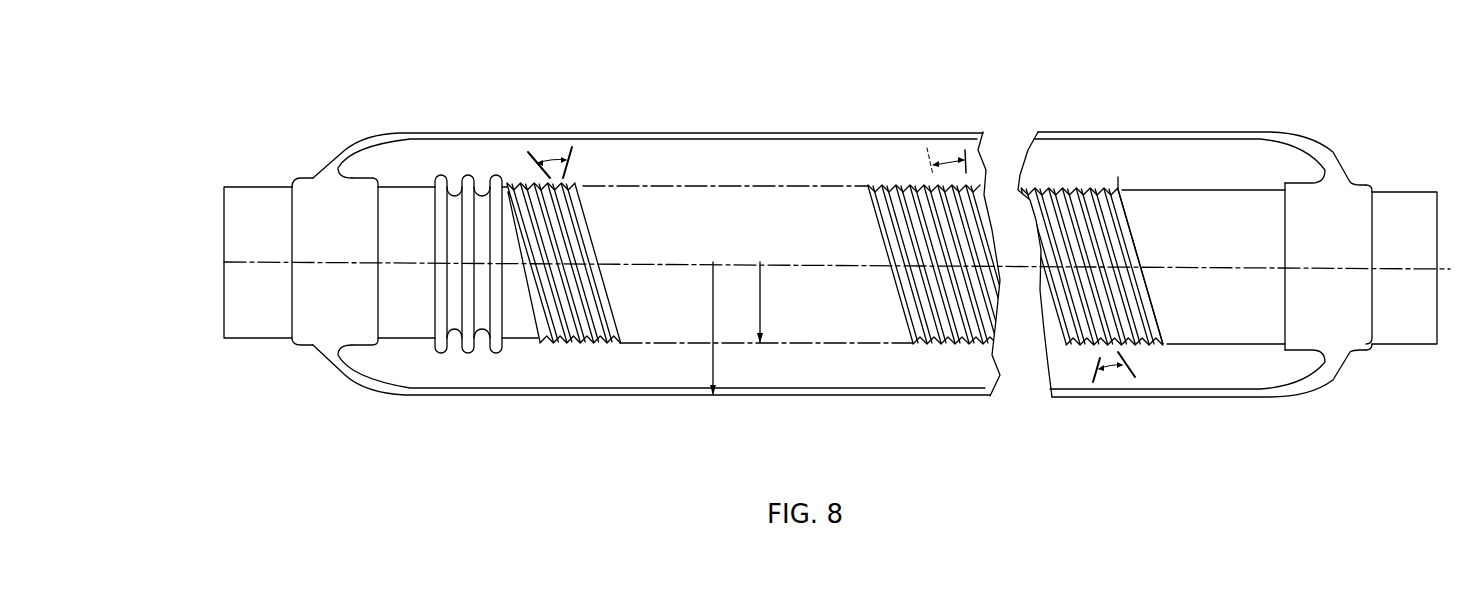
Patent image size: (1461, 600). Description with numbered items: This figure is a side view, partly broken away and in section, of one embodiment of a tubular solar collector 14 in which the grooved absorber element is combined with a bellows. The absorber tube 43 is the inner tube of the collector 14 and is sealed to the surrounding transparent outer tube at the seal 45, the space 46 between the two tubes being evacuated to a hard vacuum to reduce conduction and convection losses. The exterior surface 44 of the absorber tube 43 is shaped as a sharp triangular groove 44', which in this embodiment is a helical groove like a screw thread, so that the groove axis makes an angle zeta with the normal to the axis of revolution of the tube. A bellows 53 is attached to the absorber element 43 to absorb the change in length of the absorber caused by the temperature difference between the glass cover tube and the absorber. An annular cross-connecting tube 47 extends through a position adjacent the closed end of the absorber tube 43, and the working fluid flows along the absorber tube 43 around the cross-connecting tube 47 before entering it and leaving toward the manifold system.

The collector 14 is at (952, 114).
The absorber tube 43 is at (642, 202).
The exterior surface 44 is at (1092, 239).
The sharp triangular groove 44' is at (1157, 218).
The seal 45 is at (337, 368).
The space 46 is at (585, 358).
The cross-connecting tube 47 is at (1238, 218).
The bellows 53 is at (470, 183).